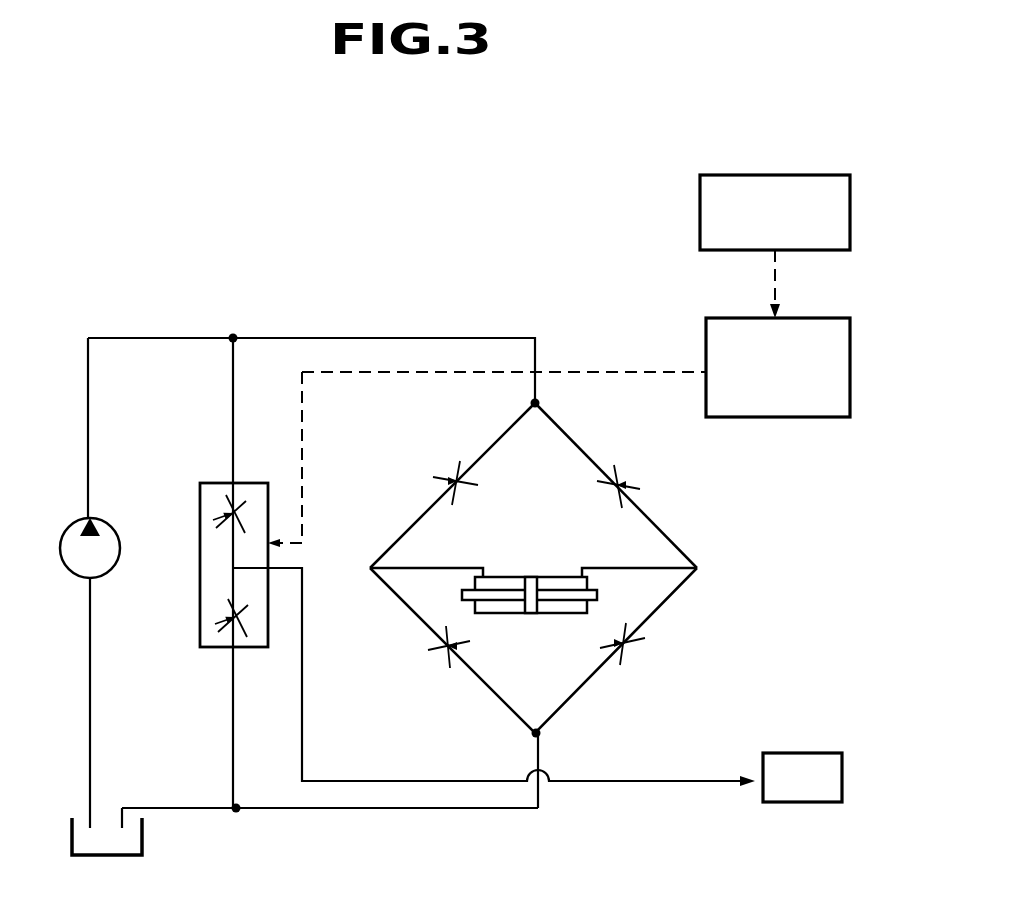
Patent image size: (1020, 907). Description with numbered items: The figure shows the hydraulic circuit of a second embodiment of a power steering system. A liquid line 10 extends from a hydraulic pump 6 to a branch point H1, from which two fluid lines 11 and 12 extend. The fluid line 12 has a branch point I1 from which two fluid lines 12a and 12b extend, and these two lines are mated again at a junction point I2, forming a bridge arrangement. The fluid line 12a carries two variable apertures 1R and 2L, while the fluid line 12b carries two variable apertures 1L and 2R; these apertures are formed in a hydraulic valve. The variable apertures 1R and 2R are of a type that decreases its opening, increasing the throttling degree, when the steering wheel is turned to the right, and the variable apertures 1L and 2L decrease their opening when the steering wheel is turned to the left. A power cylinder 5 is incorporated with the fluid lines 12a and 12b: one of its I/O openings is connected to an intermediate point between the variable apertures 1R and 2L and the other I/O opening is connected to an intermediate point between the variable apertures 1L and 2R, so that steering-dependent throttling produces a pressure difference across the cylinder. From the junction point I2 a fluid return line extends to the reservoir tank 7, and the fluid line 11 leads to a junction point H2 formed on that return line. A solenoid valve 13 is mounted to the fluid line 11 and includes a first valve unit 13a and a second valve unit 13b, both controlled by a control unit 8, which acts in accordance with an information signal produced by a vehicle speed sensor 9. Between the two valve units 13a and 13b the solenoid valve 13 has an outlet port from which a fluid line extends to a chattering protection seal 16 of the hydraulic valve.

The power cylinder 5 is at (546, 614).
The hydraulic pump 6 is at (66, 533).
The reservoir tank 7 is at (72, 820).
The control unit 8 is at (840, 318).
The vehicle speed sensor 9 is at (805, 175).
The liquid line 10 is at (167, 338).
The fluid line 11 is at (233, 400).
The fluid line 12 is at (412, 338).
The fluid line 12a is at (510, 428).
The fluid line 12b is at (562, 432).
The solenoid valve 13 is at (200, 612).
The first valve unit 13a is at (227, 513).
The second valve unit 13b is at (228, 616).
The chattering protection seal 16 is at (802, 777).
The variable aperture 1R is at (450, 480).
The variable aperture 1L is at (625, 483).
The variable aperture 2L is at (447, 656).
The variable aperture 2R is at (625, 656).
The branch point H1 is at (233, 338).
The junction point H2 is at (237, 809).
The branch point I1 is at (539, 404).
The junction point I2 is at (540, 736).